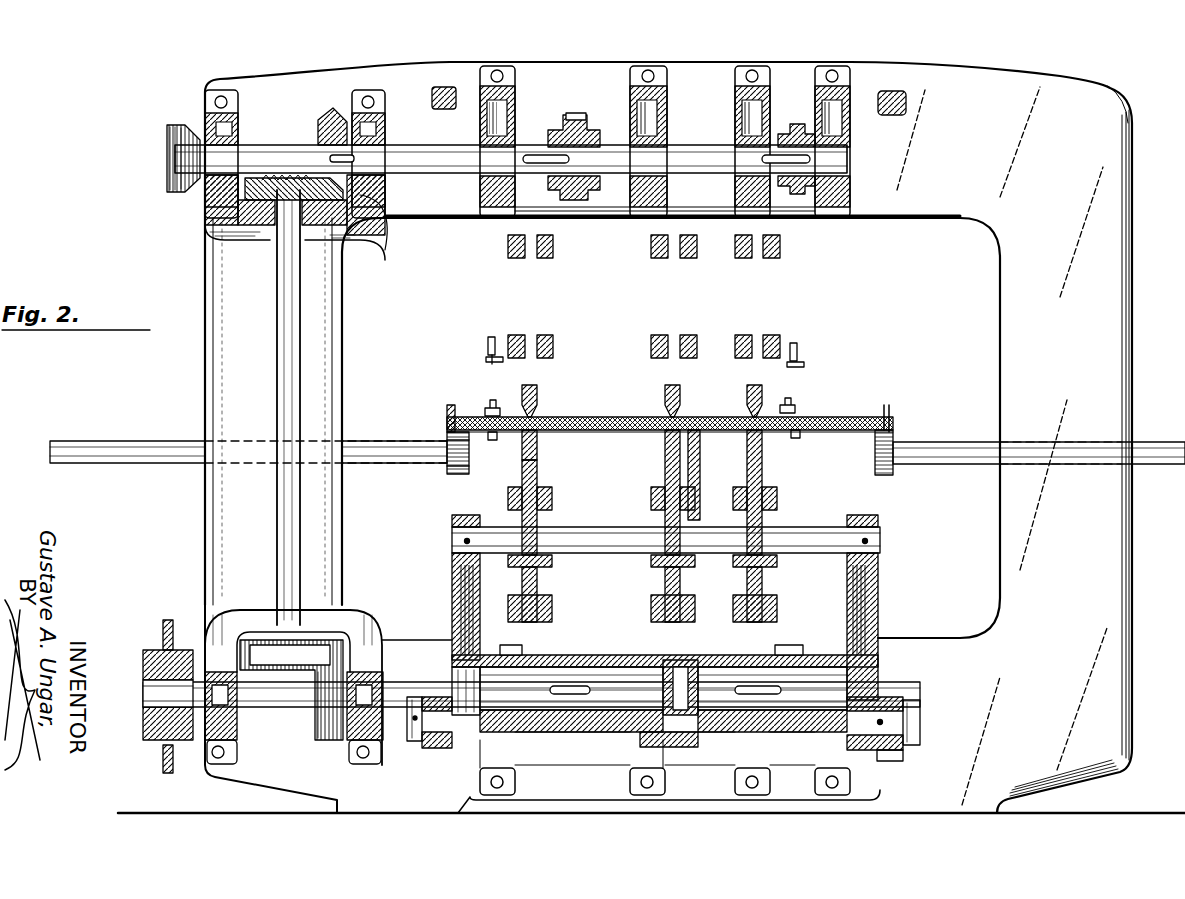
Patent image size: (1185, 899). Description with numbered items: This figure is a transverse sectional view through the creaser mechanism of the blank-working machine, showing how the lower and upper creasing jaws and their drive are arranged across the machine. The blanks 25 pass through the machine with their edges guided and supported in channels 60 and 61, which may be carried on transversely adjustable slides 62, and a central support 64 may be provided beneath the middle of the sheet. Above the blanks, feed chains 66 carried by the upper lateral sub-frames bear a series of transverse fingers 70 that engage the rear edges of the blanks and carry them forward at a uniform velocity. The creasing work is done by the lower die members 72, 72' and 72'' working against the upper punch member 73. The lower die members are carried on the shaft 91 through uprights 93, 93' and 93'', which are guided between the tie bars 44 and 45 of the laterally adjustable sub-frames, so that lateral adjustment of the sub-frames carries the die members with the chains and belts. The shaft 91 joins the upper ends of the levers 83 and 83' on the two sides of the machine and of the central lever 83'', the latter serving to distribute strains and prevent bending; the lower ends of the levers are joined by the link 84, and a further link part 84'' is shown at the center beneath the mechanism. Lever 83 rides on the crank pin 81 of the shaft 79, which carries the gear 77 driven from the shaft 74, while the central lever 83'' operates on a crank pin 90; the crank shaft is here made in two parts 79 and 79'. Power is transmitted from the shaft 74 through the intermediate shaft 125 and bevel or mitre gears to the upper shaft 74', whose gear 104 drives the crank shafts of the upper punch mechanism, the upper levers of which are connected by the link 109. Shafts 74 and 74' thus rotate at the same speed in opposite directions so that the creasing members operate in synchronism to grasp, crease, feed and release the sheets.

The blanks 25 is at (820, 418).
The tie bar 44 is at (553, 346).
The tie bar 45 is at (548, 250).
The channel 60 is at (440, 406).
The channel 61 is at (893, 418).
The slide 62 is at (155, 455).
The central support 64 is at (700, 490).
The feed chain 66 is at (486, 365).
The feeding finger 70 is at (490, 432).
The lower die member 72 is at (559, 452).
The lower die member 72' is at (776, 399).
The lower die member 72'' is at (698, 399).
The upper punch member 73 is at (540, 417).
The shaft 74 is at (291, 693).
The shaft 74' is at (507, 138).
The gear 77 is at (575, 735).
The shaft 79 is at (571, 703).
The shaft part 79' is at (772, 704).
The crank pin 81 is at (460, 668).
The lever 83 is at (438, 606).
The lever 83' is at (891, 626).
The central lever 83'' is at (665, 616).
The link 84 is at (669, 751).
The nut 84'' is at (687, 788).
The crank pin 90 is at (678, 680).
The shaft 91 is at (803, 541).
The upright 93 is at (557, 541).
The upright 93' is at (784, 526).
The upright 93'' is at (656, 526).
The gear 104 is at (567, 115).
The link 109 is at (440, 87).
The intermediate shaft 125 is at (285, 356).